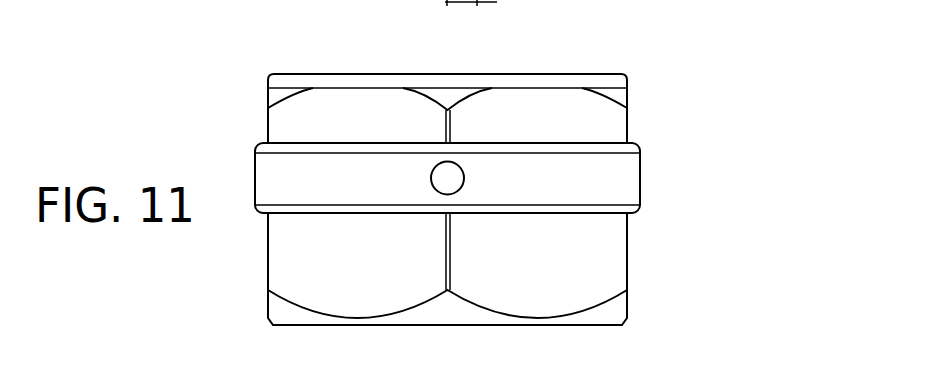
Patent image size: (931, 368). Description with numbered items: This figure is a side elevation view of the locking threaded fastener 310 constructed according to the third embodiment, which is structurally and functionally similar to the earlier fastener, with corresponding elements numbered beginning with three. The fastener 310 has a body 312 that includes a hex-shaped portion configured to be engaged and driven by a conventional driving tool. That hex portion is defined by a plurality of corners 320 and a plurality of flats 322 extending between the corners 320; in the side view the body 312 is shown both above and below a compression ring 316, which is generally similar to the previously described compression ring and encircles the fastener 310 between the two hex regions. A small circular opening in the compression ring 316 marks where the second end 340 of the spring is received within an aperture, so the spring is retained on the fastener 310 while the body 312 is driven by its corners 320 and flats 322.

The locking threaded fastener 310 is at (498, 189).
The body 312 is at (627, 258).
The compression ring 316 is at (640, 182).
The corners 320 is at (447, 268).
The flats 322 is at (347, 282).
The second end of the spring 340 is at (452, 170).